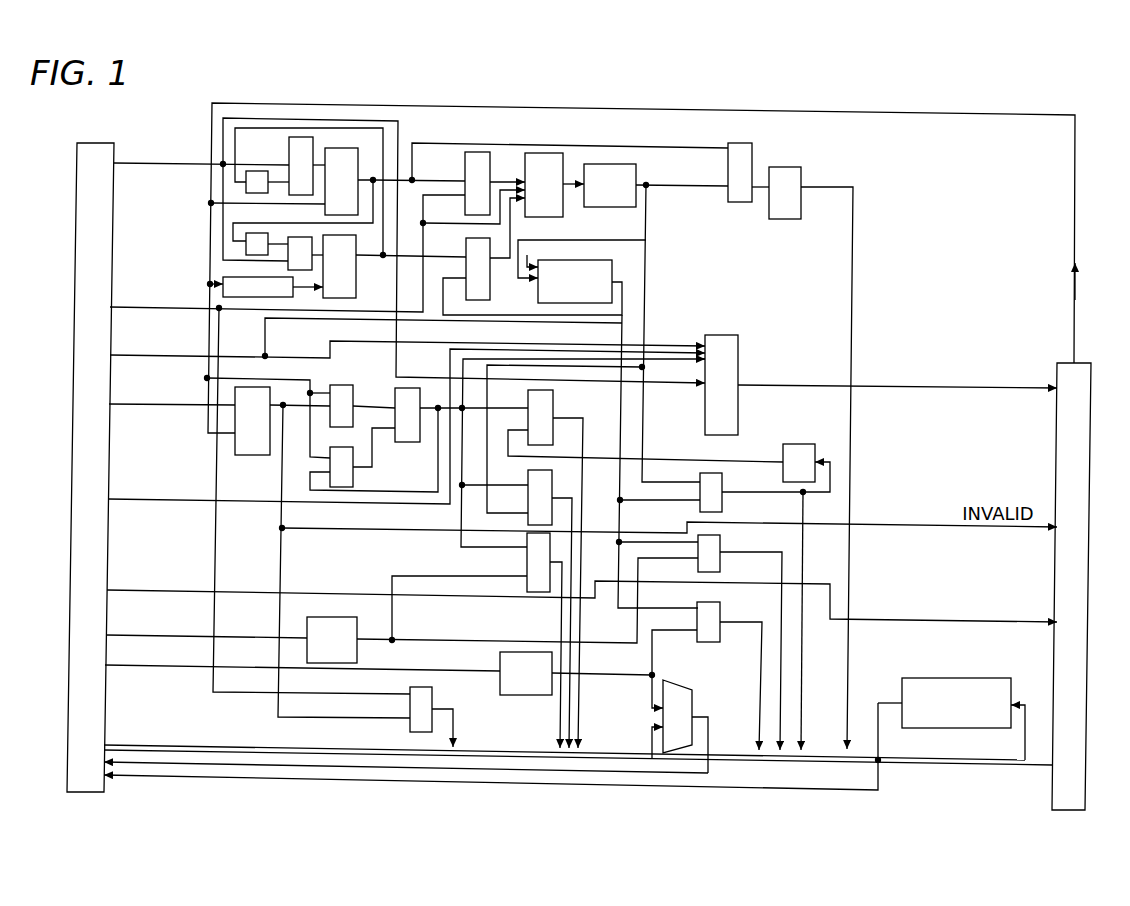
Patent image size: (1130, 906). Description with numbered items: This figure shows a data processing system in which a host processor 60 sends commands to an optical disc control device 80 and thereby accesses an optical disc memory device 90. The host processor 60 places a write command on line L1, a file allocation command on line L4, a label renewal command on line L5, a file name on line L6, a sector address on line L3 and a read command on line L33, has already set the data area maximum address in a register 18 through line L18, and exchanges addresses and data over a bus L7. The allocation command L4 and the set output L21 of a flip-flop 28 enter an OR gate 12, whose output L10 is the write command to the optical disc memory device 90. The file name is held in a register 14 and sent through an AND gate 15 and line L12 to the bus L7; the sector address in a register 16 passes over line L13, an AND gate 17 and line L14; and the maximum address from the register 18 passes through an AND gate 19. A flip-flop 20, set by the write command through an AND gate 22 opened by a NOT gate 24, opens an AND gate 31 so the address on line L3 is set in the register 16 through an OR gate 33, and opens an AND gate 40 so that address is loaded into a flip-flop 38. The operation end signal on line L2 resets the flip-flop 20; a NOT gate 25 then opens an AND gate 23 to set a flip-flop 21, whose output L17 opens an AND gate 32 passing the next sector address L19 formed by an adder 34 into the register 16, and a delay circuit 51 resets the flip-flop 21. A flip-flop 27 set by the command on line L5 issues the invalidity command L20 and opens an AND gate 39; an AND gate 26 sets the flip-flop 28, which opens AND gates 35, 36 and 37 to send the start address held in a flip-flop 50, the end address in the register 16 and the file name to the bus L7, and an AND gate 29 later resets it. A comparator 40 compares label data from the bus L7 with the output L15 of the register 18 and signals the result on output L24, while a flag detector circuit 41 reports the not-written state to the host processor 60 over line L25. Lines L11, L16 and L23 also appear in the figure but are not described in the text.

The host processor 60 is at (97, 143).
The optical disc control device 80 is at (727, 95).
The optical disc memory device 90 is at (1094, 372).
The OR gate 12 is at (738, 347).
The register 14 is at (362, 625).
The AND gate 15 is at (724, 540).
The register 16 is at (642, 168).
The AND gate 17 is at (726, 477).
The register 18 is at (494, 662).
The AND gate 19 is at (724, 608).
The flip-flop 20 is at (335, 150).
The flip-flop 21 is at (340, 245).
The AND gate 22 is at (288, 150).
The AND gate 23 is at (305, 238).
The NOT gate 24 is at (246, 186).
The NOT gate 25 is at (246, 252).
The AND gate 26 is at (340, 381).
The flip-flop 27 is at (234, 455).
The flip-flop 28 is at (402, 388).
The AND gate 29 is at (353, 476).
The AND gate 31 is at (490, 160).
The AND gate 32 is at (466, 246).
The OR gate 33 is at (548, 153).
The adder 34 is at (600, 262).
The AND gate 35 is at (556, 396).
The AND gate 36 is at (526, 479).
The AND gate 37 is at (526, 568).
The flip-flop 38 is at (806, 175).
The AND gate 39 is at (436, 694).
The AND gate / comparator 40 is at (752, 149).
The flag detector circuit 41 is at (988, 677).
The flip-flop 50 is at (798, 444).
The delay circuit 51 is at (223, 293).
The write command line L1 is at (160, 164).
The operation end signal line L2 is at (1087, 327).
The address line L3 is at (138, 306).
The file allocation command line L4 is at (138, 354).
The label renewal command line L5 is at (138, 402).
The file name line L6 is at (138, 634).
The bus L7 is at (138, 744).
The OR gate output L10 is at (933, 384).
The line L11 is at (463, 638).
The line L12 is at (772, 554).
The line L13 is at (648, 280).
The line L14 is at (802, 512).
The register output L15 is at (606, 677).
The line L16 is at (758, 692).
The flip-flop output L17 is at (372, 262).
The line L18 is at (430, 180).
The next sector address L19 is at (503, 316).
The flip-flop output L20 is at (277, 470).
The set output L21 is at (500, 408).
The line L23 is at (138, 496).
The comparator output L24 is at (570, 773).
The line L25 is at (500, 784).
The read command line L33 is at (138, 586).